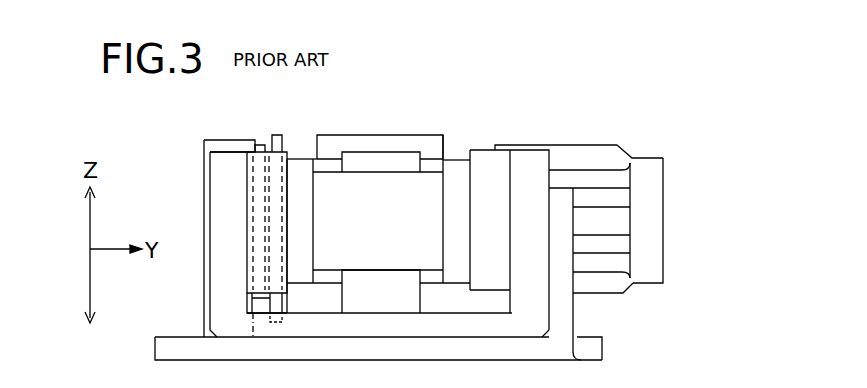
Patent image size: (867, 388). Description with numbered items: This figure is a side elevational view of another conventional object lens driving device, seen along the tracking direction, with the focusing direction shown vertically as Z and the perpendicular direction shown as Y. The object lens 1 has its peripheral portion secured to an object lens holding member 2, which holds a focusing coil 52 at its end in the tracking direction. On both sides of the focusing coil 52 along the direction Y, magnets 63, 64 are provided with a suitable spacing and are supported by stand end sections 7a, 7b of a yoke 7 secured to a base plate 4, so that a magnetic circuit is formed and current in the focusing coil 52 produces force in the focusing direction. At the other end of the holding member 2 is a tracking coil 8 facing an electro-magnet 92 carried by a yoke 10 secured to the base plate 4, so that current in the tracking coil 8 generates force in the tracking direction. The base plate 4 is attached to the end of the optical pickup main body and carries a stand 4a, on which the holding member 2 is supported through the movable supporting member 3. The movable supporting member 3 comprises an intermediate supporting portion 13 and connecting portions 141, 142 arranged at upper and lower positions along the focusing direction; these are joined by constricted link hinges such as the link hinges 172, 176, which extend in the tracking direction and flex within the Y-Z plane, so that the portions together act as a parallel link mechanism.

The movable supporting member 3 is at (655, 145).
The yoke 10 is at (217, 139).
The electro-magnet 92 is at (262, 147).
The tracking coil 8 is at (280, 137).
The object lens holding member 2 is at (302, 158).
The object lens 1 is at (327, 140).
The focusing coil 52 is at (392, 180).
The magnet 63 is at (287, 212).
The magnet 64 is at (470, 235).
The stand end section 7b is at (518, 160).
The stand end section 7a is at (220, 187).
The yoke 7 is at (418, 325).
The connecting portion 141 is at (570, 157).
The link hinge 172 is at (632, 158).
The intermediate supporting portion 13 is at (652, 222).
The link hinge 176 is at (630, 288).
The connecting portion 142 is at (603, 288).
The stand 4a is at (580, 318).
The base plate 4 is at (327, 350).